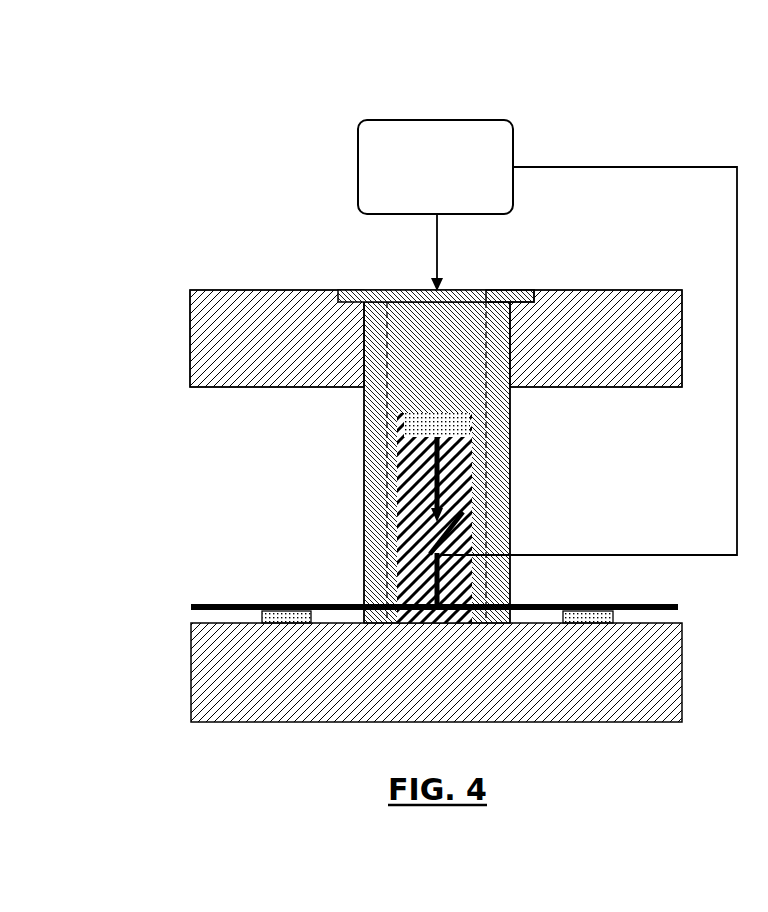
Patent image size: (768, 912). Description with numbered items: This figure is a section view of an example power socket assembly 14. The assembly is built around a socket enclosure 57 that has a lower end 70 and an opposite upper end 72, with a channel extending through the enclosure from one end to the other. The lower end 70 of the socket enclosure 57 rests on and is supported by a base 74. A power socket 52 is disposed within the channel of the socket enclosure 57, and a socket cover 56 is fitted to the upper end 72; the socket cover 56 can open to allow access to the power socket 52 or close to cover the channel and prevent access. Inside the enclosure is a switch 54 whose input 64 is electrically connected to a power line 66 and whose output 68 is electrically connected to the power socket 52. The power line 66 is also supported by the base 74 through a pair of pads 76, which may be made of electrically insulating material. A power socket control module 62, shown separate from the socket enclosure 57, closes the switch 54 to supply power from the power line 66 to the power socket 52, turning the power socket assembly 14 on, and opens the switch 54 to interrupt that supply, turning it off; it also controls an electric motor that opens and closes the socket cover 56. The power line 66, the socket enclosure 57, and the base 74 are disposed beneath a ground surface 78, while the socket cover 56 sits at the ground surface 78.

The power socket assembly 14 is at (230, 71).
The power socket 52 is at (465, 420).
The switch 54 is at (470, 520).
The socket cover 56 is at (525, 292).
The socket enclosure 57 is at (364, 430).
The power socket control module 62 is at (405, 118).
The input 64 is at (432, 556).
The power line 66 is at (223, 604).
The output 68 is at (432, 514).
The lower end 70 is at (375, 623).
The upper end 72 is at (370, 300).
The base 74 is at (665, 655).
The pads 76 is at (280, 606).
The ground surface 78 is at (640, 290).